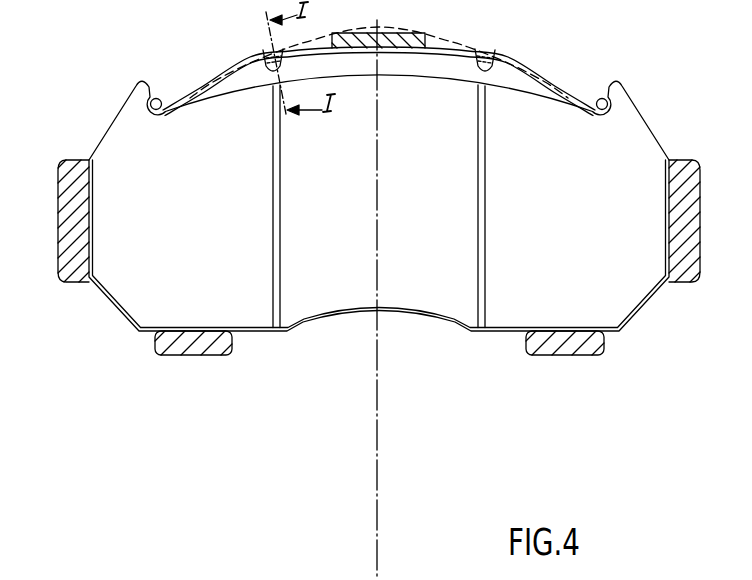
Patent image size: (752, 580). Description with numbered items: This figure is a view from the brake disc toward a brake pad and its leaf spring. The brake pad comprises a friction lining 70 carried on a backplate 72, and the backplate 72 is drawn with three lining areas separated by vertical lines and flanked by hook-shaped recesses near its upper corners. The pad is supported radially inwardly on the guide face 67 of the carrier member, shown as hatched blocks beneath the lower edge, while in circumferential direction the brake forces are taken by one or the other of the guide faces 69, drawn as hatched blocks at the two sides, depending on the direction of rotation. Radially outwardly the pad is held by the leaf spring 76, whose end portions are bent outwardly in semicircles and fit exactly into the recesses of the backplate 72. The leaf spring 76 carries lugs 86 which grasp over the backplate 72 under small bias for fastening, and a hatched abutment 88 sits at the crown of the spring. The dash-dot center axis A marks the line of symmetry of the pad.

The backplate 72 is at (121, 124).
The friction lining 70 is at (203, 252).
The leaf spring 76 is at (214, 75).
The lugs 86 is at (272, 74).
The abutment block 88 is at (408, 33).
The guide faces 69 is at (68, 231).
The guide face 67 is at (203, 343).
The center axis A is at (379, 578).